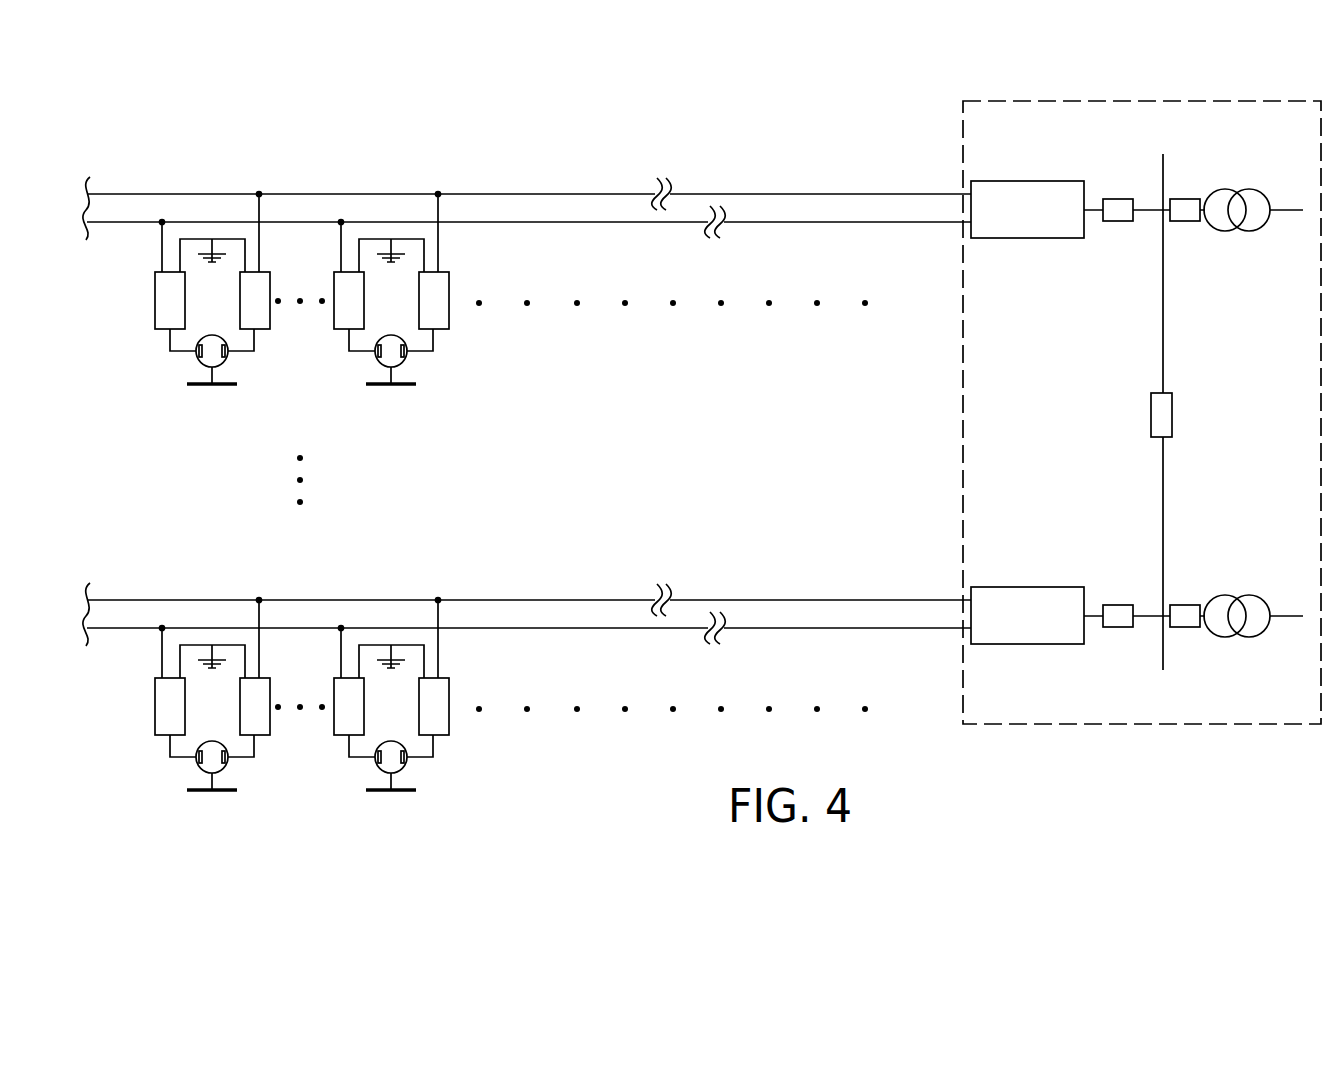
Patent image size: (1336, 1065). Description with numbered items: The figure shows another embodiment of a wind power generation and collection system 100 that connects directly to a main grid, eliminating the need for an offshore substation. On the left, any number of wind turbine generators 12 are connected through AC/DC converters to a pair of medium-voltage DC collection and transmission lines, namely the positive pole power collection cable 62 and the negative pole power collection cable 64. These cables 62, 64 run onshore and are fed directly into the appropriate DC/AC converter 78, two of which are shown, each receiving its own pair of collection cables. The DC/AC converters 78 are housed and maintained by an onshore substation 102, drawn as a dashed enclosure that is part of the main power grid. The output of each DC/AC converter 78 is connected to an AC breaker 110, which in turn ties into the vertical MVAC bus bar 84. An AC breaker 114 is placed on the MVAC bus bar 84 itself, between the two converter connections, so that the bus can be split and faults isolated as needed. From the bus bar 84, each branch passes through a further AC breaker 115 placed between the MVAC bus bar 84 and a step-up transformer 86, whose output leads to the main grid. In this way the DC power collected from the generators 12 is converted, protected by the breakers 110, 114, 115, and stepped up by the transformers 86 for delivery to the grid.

The power generation and collection system 100 is at (760, 70).
The onshore substation 102 is at (955, 126).
The generator 12 is at (212, 418).
The positive pole power collection cable 62 is at (847, 194).
The negative pole power collection cable 64 is at (868, 222).
The DC/AC converter 78 is at (1024, 170).
The AC breaker 110 is at (1118, 221).
The MVAC bus bar 84 is at (1163, 313).
The AC breaker 114 is at (1151, 413).
The AC breaker 115 is at (1184, 199).
The step-up transformer 86 is at (1232, 190).